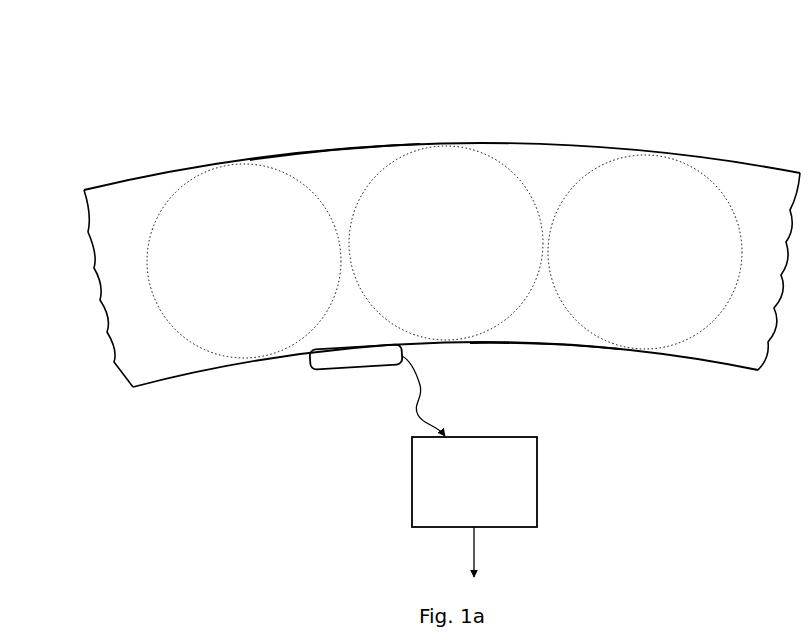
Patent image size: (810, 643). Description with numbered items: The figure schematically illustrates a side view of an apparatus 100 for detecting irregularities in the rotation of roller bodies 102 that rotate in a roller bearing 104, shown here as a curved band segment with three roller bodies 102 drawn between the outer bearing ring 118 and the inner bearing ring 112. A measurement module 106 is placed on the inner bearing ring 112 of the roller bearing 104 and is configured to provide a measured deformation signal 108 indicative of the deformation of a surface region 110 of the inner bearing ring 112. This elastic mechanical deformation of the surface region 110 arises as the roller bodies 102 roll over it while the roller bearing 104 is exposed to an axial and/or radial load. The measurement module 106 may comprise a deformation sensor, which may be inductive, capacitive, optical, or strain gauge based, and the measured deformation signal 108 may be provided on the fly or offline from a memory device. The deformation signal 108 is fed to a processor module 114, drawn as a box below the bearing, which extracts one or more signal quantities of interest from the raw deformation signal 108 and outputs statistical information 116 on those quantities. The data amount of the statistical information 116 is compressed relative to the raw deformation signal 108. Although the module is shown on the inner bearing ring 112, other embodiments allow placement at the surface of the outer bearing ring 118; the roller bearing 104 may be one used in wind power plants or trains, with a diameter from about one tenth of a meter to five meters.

The apparatus 100 is at (501, 82).
The roller bodies 102 is at (224, 273).
The roller bearing 104 is at (597, 124).
The measurement module 106 is at (325, 382).
The measured deformation signal 108 is at (421, 408).
The surface region 110 is at (358, 346).
The inner bearing ring 112 is at (545, 345).
The processor module 114 is at (454, 494).
The statistical information 116 is at (477, 552).
The outer bearing ring 118 is at (323, 150).